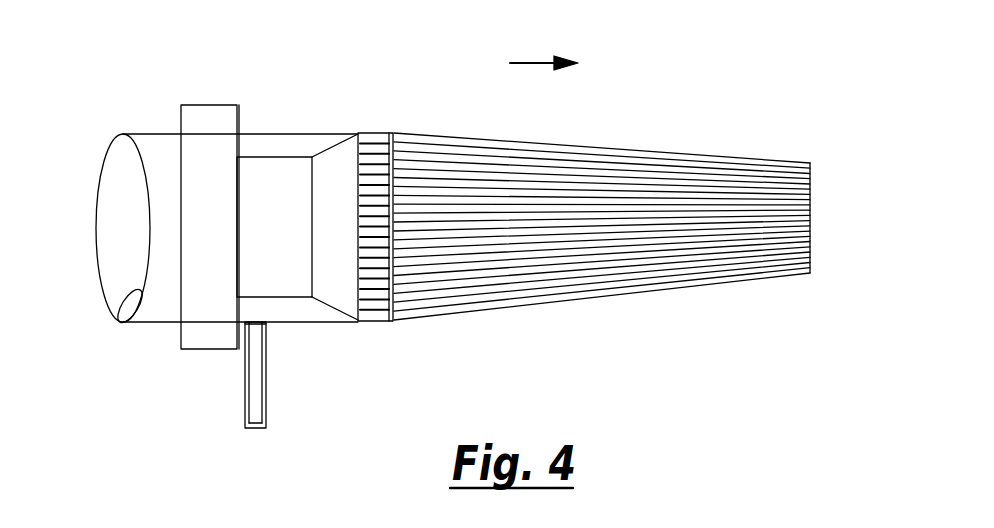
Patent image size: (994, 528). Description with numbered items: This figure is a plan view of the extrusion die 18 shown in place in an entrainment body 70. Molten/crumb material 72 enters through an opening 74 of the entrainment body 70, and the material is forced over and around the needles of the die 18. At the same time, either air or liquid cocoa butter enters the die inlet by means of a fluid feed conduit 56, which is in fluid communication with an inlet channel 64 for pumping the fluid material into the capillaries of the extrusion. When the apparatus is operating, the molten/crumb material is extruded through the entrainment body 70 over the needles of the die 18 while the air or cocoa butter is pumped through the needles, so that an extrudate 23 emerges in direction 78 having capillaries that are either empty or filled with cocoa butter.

The die 18 is at (300, 283).
The extrudate 23 is at (682, 260).
The fluid feed conduit 56 is at (255, 429).
The inlet channel 64 is at (266, 326).
The entrainment body 70 is at (347, 324).
The molten/crumb material 72 is at (117, 197).
The opening 74 is at (115, 318).
The direction 78 is at (531, 62).